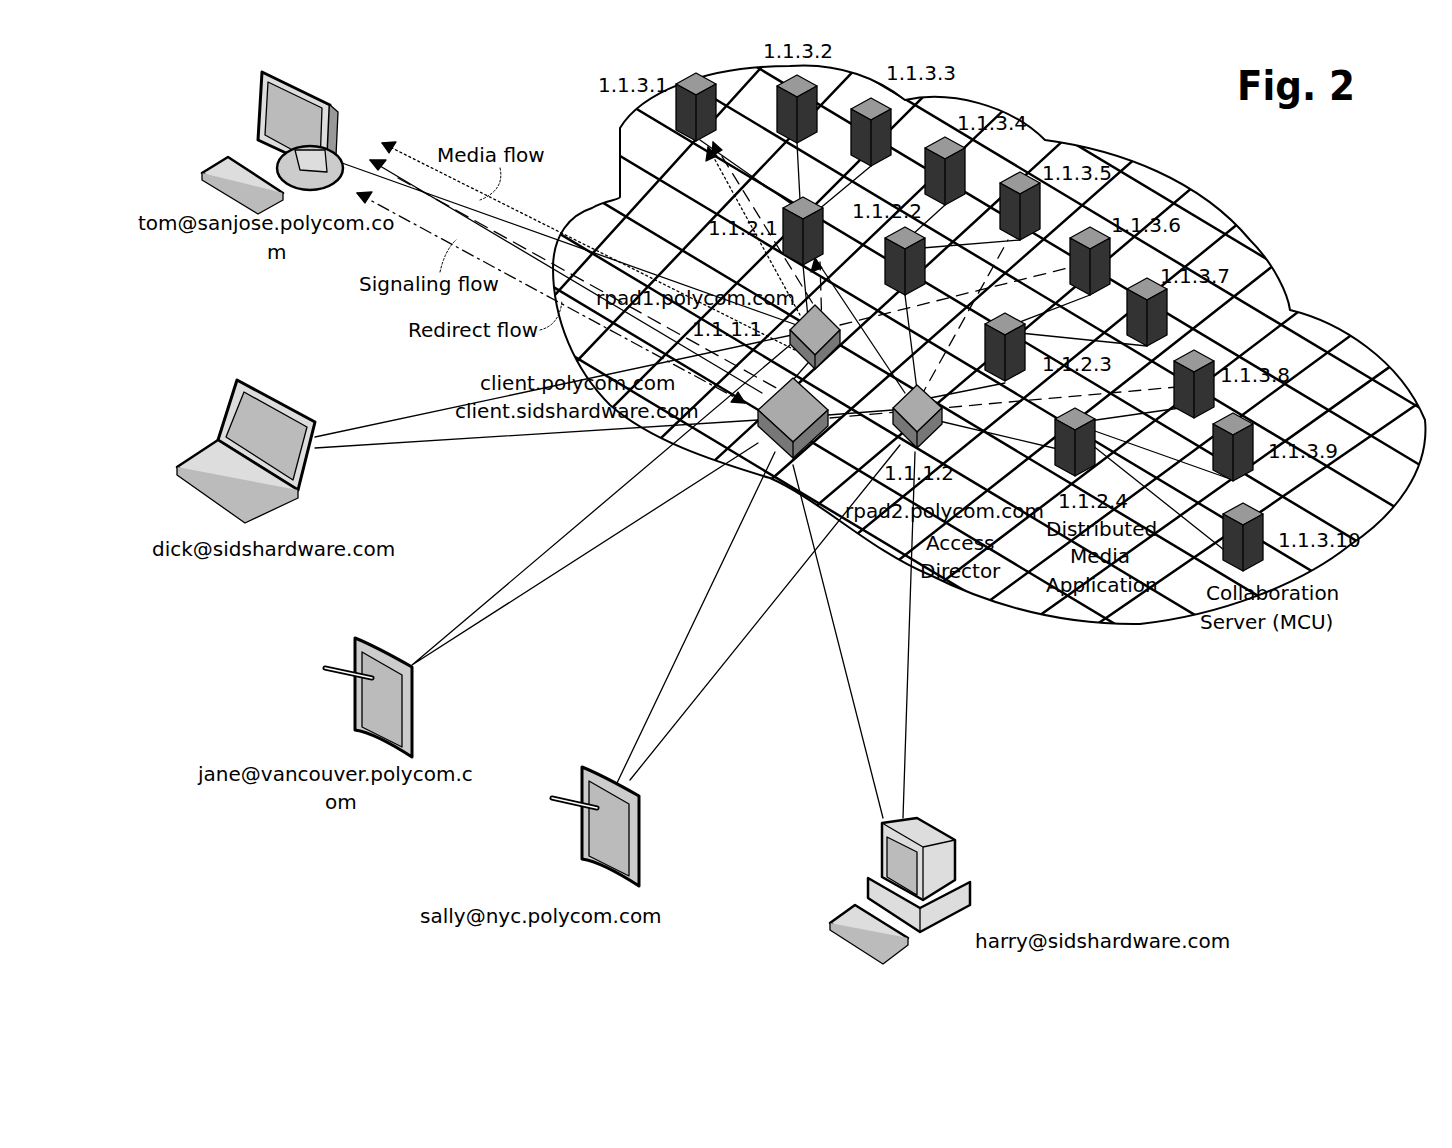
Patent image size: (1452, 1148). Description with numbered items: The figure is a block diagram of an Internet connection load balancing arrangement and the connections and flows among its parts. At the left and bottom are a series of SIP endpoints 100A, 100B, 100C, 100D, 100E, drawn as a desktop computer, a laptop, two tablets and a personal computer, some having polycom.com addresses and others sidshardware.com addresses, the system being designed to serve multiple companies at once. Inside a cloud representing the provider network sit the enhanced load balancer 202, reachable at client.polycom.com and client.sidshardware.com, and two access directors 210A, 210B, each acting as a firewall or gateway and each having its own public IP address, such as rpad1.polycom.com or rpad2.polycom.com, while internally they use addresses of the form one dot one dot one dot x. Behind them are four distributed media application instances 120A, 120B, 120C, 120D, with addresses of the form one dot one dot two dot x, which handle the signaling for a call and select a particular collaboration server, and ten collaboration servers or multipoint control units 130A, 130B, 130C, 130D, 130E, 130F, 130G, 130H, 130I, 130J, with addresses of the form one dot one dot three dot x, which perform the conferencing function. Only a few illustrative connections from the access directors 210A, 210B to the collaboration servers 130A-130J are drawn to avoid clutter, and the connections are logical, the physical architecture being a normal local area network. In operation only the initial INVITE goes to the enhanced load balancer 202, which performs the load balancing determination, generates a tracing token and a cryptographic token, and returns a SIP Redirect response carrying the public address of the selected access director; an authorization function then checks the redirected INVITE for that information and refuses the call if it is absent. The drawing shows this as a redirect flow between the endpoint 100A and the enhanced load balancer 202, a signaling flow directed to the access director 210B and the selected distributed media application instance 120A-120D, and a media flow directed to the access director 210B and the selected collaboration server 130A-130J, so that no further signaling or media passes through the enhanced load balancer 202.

The SIP endpoint 100A is at (298, 75).
The SIP endpoint 100B is at (265, 385).
The SIP endpoint 100C is at (412, 745).
The SIP endpoint 100D is at (645, 838).
The SIP endpoint 100E is at (955, 838).
The distributed media application instance 120A is at (1102, 462).
The distributed media application instance 120B is at (1030, 350).
The distributed media application instance 120C is at (960, 262).
The distributed media application instance 120D is at (862, 235).
The collaboration server (MCU) 130A is at (1258, 512).
The collaboration server (MCU) 130B is at (1252, 425).
The collaboration server (MCU) 130C is at (1210, 355).
The collaboration server (MCU) 130D is at (1168, 338).
The collaboration server (MCU) 130E is at (1112, 282).
The collaboration server (MCU) 130F is at (1042, 235).
The collaboration server (MCU) 130G is at (968, 190).
The collaboration server (MCU) 130H is at (892, 138).
The collaboration server (MCU) 130I is at (818, 117).
The collaboration server (MCU) 130J is at (690, 75).
The enhanced load balancer 202 is at (832, 430).
The access director 210A is at (945, 438).
The access director 210B is at (828, 352).